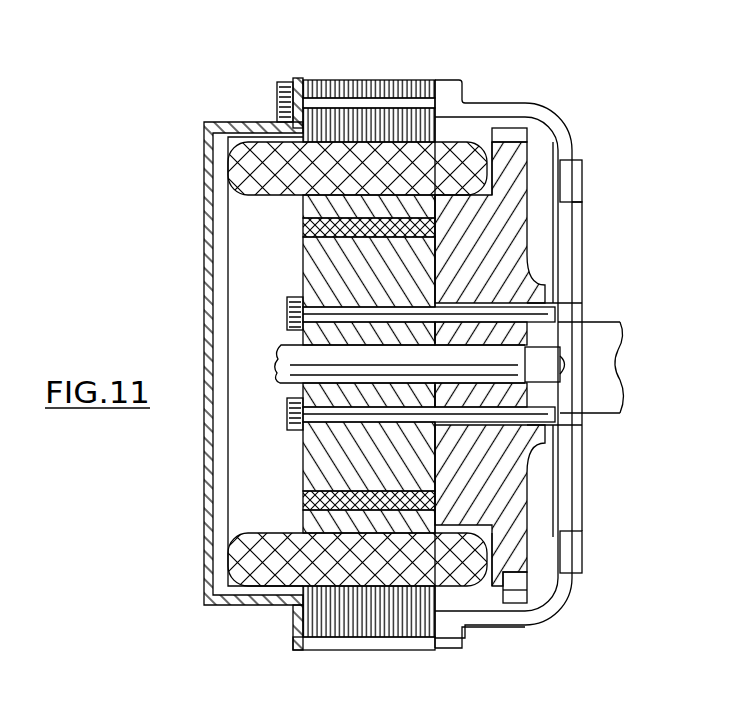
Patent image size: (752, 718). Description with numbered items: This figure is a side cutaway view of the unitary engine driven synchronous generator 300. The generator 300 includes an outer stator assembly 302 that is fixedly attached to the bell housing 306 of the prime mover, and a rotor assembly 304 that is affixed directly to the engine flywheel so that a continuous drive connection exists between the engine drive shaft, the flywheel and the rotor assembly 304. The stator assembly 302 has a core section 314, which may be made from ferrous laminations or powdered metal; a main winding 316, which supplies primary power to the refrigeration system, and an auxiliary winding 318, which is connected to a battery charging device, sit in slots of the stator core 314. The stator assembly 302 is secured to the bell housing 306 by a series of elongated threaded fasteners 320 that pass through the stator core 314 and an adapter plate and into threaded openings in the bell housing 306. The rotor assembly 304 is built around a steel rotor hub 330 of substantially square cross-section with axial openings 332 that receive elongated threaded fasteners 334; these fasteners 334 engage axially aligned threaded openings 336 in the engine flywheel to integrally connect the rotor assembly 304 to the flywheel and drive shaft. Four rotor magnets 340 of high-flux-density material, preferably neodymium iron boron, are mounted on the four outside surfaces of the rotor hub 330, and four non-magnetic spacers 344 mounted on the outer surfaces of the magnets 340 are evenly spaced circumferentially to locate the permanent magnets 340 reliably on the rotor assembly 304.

The unitary engine driven synchronous generator 300 is at (104, 172).
The outer stator assembly 302 is at (415, 79).
The rotor assembly 304 is at (272, 258).
The bell housing 306 is at (565, 125).
The core section 314 is at (462, 126).
The main winding 316 is at (250, 150).
The auxiliary winding 318 is at (318, 334).
The elongated threaded fasteners 320 is at (275, 97).
The steel rotor hub 330 is at (300, 452).
The axial openings 332 is at (303, 298).
The elongated threaded fasteners 334 is at (516, 312).
The threaded openings 336 is at (546, 316).
The rotor magnets 340 is at (303, 229).
The non-magnetic spacers 344 is at (303, 207).